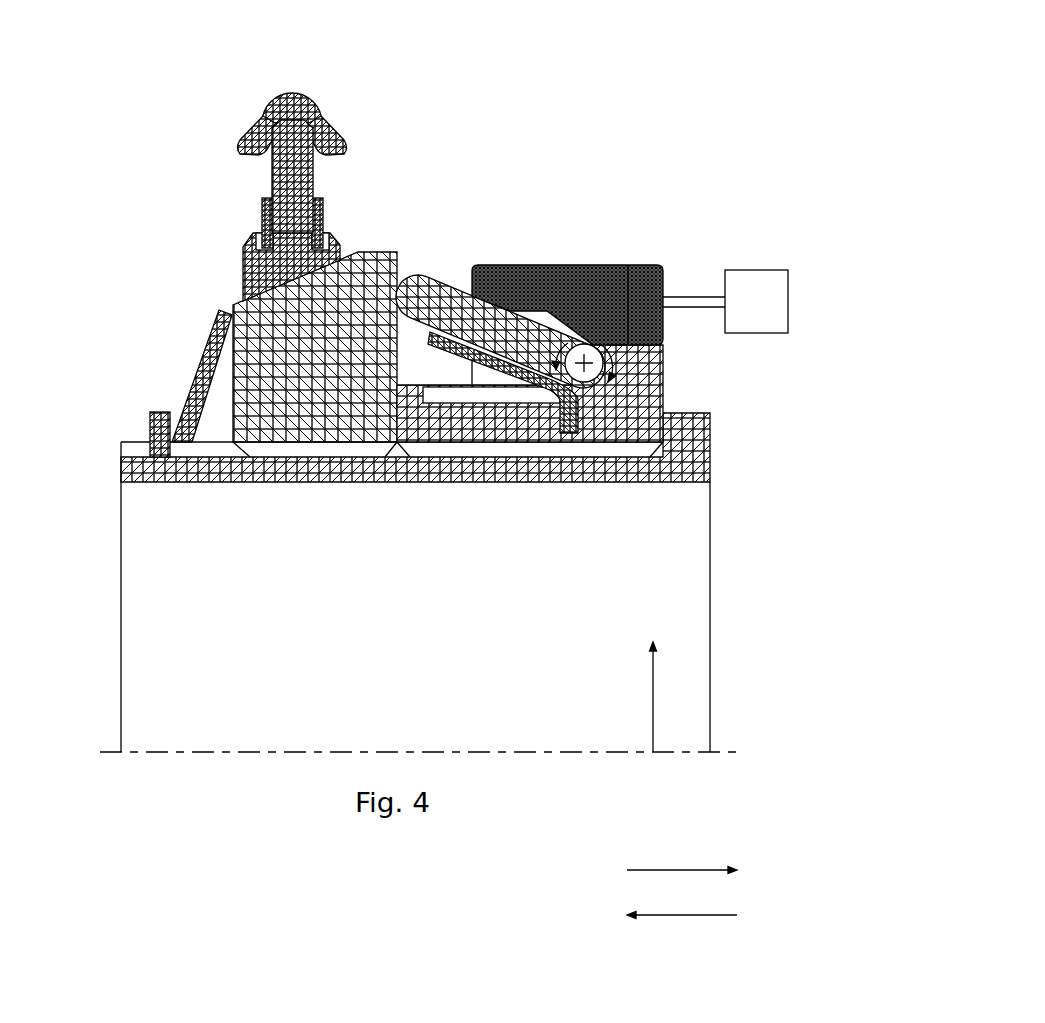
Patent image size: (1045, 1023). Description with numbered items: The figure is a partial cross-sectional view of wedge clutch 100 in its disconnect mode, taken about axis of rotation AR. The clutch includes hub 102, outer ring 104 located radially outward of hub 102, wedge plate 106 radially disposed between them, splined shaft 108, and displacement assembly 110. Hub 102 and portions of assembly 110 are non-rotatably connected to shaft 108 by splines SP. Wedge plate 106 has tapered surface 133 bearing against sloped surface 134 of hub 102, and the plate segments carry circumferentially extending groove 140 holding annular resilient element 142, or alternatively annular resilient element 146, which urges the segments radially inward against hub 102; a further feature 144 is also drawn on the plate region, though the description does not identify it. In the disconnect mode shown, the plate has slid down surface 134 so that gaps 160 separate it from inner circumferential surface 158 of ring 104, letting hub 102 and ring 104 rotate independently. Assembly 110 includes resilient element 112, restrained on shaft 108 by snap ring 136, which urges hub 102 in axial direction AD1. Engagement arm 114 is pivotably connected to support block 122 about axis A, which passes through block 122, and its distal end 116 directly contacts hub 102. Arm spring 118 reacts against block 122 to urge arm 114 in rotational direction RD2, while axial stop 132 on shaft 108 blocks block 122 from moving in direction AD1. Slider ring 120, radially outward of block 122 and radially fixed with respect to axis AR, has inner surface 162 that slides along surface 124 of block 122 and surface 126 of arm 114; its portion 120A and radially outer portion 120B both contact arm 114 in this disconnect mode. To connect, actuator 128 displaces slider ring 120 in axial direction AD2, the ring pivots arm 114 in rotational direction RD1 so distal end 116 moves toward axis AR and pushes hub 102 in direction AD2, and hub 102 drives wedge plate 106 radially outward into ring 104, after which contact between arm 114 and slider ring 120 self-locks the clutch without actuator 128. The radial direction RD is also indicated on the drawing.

The wedge clutch 100 is at (587, 68).
The hub 102 is at (376, 246).
The outer ring 104 is at (293, 91).
The wedge plate 106 is at (320, 177).
The splined shaft 108 is at (154, 490).
The displacement assembly 110 is at (563, 337).
The resilient element 112 is at (193, 363).
The engagement arm 114 is at (440, 272).
The distal end 116 is at (397, 280).
The arm spring 118 is at (512, 333).
The slider ring 120 is at (614, 264).
The portion of slider ring 120A is at (647, 328).
The portion of slider ring 120B is at (542, 288).
The support block 122 is at (603, 450).
The surface of support block 124 is at (652, 348).
The surface of engagement arm 126 is at (460, 290).
The actuator 128 is at (772, 270).
The axial stop 132 is at (697, 432).
The tapered surface 133 is at (317, 273).
The sloped surface 134 is at (234, 302).
The snap ring 136 is at (148, 428).
The circumferentially extending groove 140 is at (334, 234).
The annular resilient element 142 is at (324, 210).
The collar block 144 is at (243, 250).
The annular resilient element 146 is at (262, 217).
The inner circumferential surface 158 is at (258, 117).
The gaps 160 is at (265, 110).
The inner surface of slider ring 162 is at (630, 330).
The axis A is at (590, 343).
The splines SP is at (293, 448).
The rotational direction RD1 is at (535, 390).
The rotational direction RD2 is at (628, 390).
The radial direction RD is at (652, 720).
The axis of rotation AR is at (502, 753).
The axial direction AD1 is at (662, 868).
The axial direction AD2 is at (682, 917).